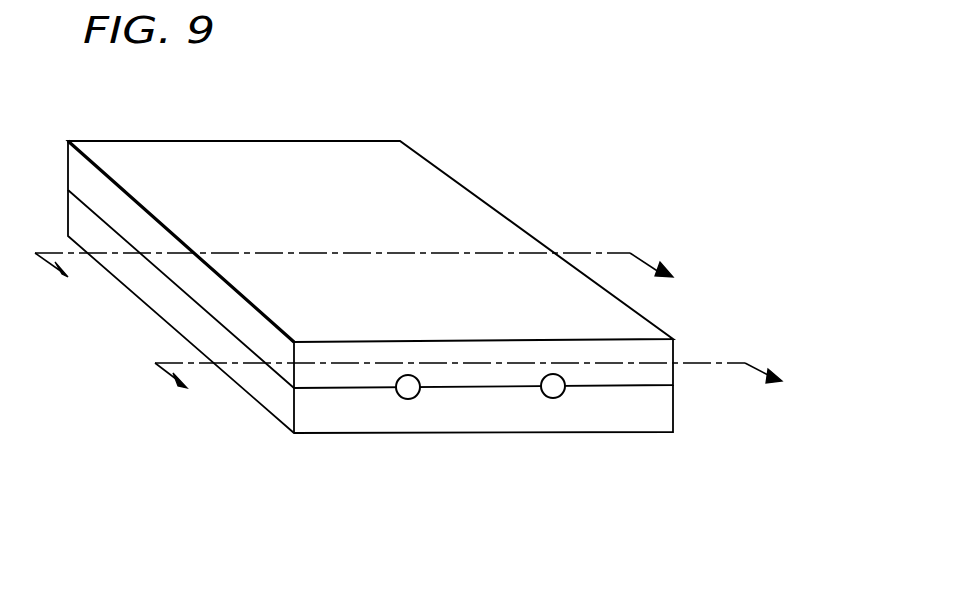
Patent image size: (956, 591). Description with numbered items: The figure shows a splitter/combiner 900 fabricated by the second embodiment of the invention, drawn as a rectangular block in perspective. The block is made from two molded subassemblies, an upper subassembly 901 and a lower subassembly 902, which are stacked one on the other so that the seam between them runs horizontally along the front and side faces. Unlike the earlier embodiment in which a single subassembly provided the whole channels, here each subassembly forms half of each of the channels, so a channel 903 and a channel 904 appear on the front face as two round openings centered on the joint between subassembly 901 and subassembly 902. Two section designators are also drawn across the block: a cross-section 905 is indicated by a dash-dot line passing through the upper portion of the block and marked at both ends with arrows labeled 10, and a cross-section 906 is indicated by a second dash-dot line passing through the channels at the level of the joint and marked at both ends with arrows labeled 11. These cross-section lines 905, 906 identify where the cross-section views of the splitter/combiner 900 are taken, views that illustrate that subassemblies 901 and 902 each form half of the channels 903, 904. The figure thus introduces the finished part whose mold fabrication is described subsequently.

The splitter/combiner 900 is at (439, 286).
The subassembly 901 is at (668, 350).
The subassembly 902 is at (497, 435).
The channel 903 is at (413, 399).
The channel 904 is at (556, 398).
The cross-section 905 is at (385, 240).
The cross-section 906 is at (412, 403).
The cross-section 10 view indicator 10 is at (366, 278).
The cross-section 11 view indicator 11 is at (481, 387).